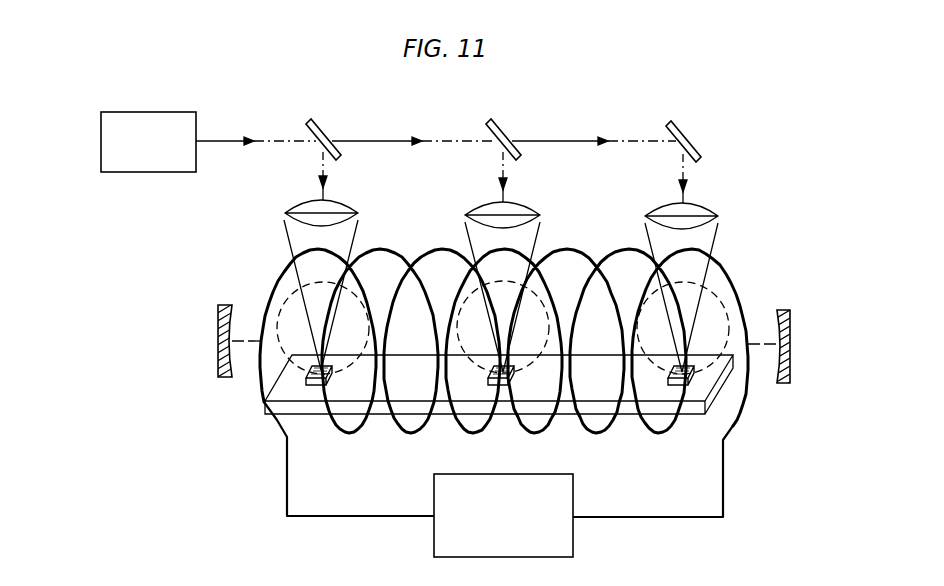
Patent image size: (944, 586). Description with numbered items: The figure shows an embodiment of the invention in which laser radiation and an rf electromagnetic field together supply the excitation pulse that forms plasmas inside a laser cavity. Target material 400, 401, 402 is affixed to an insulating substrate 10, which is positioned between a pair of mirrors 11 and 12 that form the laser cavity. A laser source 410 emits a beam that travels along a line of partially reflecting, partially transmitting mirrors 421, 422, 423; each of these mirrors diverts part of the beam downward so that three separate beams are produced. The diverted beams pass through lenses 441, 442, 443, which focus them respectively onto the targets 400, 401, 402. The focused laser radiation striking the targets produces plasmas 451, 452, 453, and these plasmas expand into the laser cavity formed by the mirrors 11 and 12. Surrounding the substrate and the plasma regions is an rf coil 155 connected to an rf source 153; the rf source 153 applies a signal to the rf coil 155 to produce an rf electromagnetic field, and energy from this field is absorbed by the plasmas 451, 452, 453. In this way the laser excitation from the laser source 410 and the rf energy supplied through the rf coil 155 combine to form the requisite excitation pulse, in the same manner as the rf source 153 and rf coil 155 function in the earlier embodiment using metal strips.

The insulating substrate 10 is at (717, 398).
The mirror 11 is at (219, 311).
The mirror 12 is at (783, 311).
The rf source 153 is at (573, 538).
The rf coil 155 is at (280, 295).
The target material 400 is at (312, 388).
The target material 401 is at (496, 388).
The target material 402 is at (684, 388).
The laser source 410 is at (184, 112).
The partially reflecting, partially transmitting mirror 421 is at (330, 134).
The partially reflecting, partially transmitting mirror 422 is at (510, 134).
The partially reflecting, partially transmitting mirror 423 is at (688, 136).
The lens 441 is at (342, 201).
The lens 442 is at (528, 203).
The lens 443 is at (698, 205).
The plasma 451 is at (298, 287).
The plasma 452 is at (479, 289).
The plasma 453 is at (658, 291).